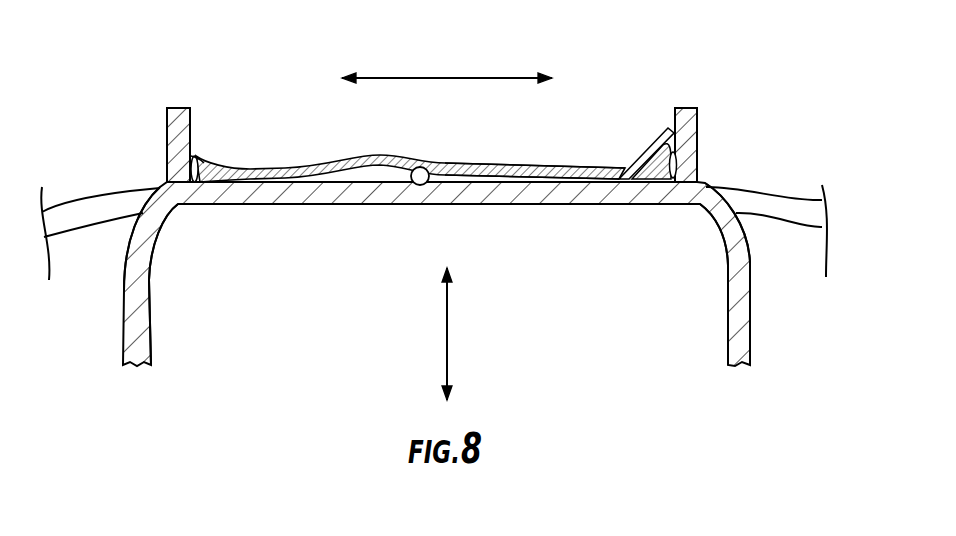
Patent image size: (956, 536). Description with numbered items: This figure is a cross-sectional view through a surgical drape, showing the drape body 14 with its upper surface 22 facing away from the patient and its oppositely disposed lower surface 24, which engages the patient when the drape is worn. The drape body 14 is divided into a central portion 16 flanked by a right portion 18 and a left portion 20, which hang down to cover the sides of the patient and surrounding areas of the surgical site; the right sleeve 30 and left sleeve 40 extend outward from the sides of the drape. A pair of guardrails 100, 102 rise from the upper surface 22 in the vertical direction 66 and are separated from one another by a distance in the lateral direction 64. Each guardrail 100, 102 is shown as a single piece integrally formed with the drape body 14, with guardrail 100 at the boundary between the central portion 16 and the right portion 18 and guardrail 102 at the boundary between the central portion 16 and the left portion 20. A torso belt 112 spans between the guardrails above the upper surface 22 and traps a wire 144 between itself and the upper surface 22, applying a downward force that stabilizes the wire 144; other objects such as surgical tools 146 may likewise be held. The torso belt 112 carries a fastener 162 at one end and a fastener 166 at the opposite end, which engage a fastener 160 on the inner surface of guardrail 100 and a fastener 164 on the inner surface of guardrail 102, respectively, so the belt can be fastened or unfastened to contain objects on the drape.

The drape body 14 is at (578, 205).
The central portion 16 is at (324, 204).
The right portion 18 is at (125, 277).
The left portion 20 is at (750, 343).
The upper surface 22 is at (271, 168).
The lower surface 24 is at (464, 215).
The right sleeve 30 is at (88, 198).
The left sleeve 40 is at (748, 193).
The lateral direction 64 is at (453, 78).
The vertical direction 66 is at (447, 333).
The guardrail 100 is at (178, 124).
The guardrail 102 is at (690, 127).
The torso belt 112 is at (547, 167).
The wire 144 is at (424, 167).
The surgical tool 146 is at (671, 130).
The fastener 160 is at (191, 170).
The fastener 162 is at (199, 161).
The fastener 164 is at (677, 162).
The fastener 166 is at (660, 156).